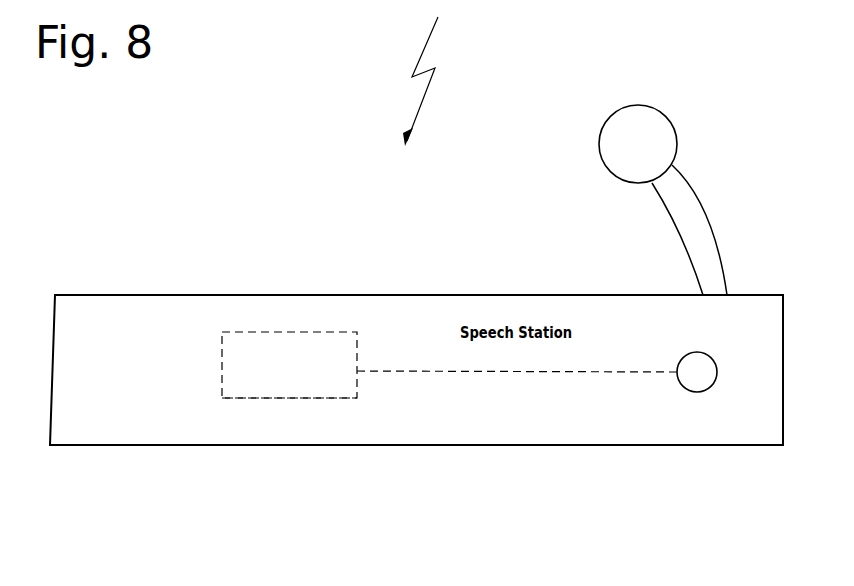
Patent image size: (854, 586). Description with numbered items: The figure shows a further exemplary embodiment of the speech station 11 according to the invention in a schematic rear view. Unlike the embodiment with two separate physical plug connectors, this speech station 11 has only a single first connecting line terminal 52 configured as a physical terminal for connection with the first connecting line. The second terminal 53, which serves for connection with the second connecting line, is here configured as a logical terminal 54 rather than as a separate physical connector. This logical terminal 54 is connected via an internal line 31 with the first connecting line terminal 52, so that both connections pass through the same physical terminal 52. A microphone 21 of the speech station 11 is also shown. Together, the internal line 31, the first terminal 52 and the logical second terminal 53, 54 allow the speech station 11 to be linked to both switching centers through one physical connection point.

The speech station 11 is at (440, 76).
The microphone 21 is at (697, 227).
The internal line 31 is at (493, 372).
The first connecting line terminal 52 is at (698, 375).
The second terminal 53 is at (318, 332).
The logical terminal 54 is at (248, 403).